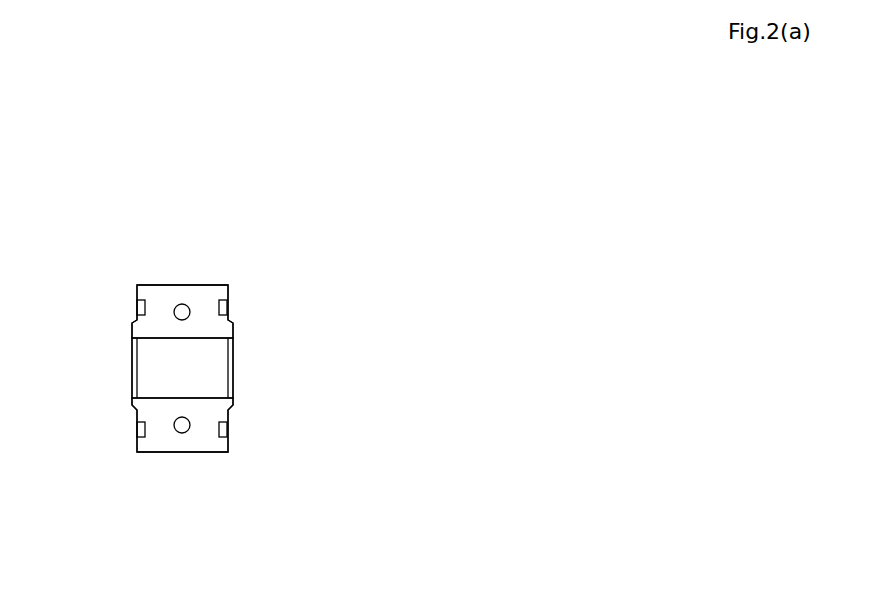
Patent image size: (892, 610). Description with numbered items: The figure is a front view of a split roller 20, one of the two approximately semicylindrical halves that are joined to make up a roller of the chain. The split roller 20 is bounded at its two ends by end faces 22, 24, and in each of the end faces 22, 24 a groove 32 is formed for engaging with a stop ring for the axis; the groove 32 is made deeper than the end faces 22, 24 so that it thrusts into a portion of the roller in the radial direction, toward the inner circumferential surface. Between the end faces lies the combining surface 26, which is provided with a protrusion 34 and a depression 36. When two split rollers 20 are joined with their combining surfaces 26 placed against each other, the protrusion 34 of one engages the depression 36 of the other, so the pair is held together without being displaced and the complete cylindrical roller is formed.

The split roller 20 is at (188, 192).
The end face 22 is at (228, 293).
The end face 24 is at (133, 330).
The combining surface 26 is at (200, 442).
The groove 32 is at (137, 430).
The protrusion 34 is at (176, 307).
The depression 36 is at (176, 430).